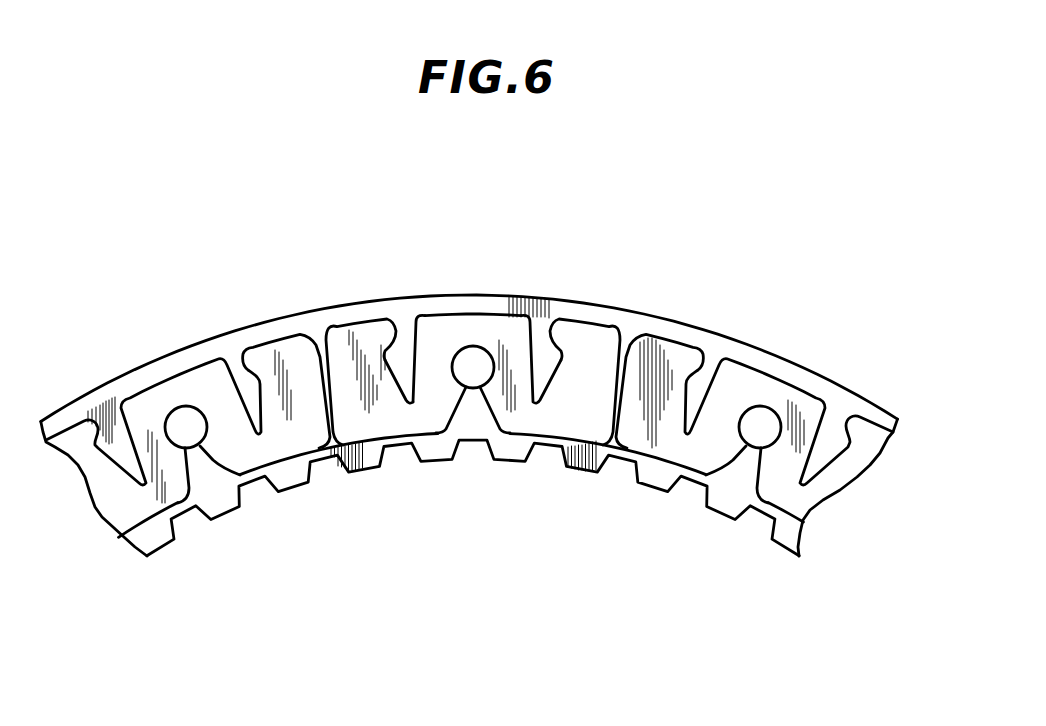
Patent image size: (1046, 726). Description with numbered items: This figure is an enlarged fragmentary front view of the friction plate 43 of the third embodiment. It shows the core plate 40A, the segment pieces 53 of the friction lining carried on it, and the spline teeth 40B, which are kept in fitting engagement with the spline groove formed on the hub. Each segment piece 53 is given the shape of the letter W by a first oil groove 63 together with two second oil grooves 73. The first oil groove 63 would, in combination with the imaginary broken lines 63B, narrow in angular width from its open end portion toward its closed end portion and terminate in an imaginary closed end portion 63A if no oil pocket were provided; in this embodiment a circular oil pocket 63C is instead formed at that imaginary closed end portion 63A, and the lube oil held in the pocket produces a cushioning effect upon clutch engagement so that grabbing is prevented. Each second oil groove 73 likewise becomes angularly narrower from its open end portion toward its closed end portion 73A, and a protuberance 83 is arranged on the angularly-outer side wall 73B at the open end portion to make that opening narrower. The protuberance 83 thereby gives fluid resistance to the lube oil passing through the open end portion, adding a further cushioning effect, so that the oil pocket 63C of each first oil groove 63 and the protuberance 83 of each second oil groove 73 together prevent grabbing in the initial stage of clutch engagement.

The friction plate 43 is at (790, 219).
The core plate 40A is at (469, 390).
The spline teeth 40B is at (733, 505).
The segment piece 53 is at (517, 323).
The first oil groove 63 is at (470, 420).
The imaginary closed end portion 63A is at (473, 370).
The broken lines 63B is at (473, 375).
The circular oil pocket 63C is at (493, 395).
The second oil groove 73 is at (405, 360).
The closed end portion 73A is at (400, 385).
The angularly-outer side wall 73B is at (393, 388).
The protuberance 83 is at (387, 332).